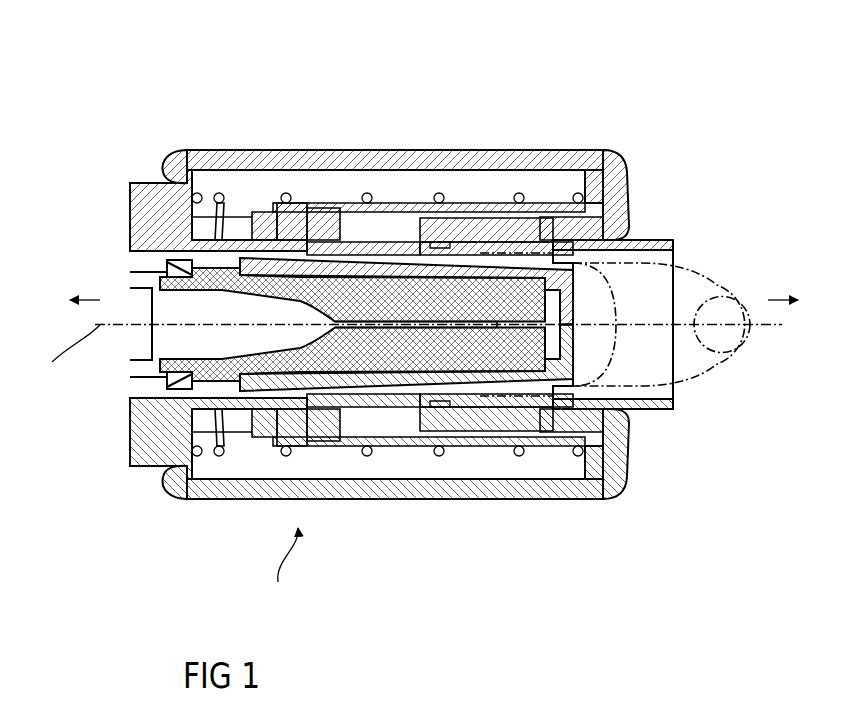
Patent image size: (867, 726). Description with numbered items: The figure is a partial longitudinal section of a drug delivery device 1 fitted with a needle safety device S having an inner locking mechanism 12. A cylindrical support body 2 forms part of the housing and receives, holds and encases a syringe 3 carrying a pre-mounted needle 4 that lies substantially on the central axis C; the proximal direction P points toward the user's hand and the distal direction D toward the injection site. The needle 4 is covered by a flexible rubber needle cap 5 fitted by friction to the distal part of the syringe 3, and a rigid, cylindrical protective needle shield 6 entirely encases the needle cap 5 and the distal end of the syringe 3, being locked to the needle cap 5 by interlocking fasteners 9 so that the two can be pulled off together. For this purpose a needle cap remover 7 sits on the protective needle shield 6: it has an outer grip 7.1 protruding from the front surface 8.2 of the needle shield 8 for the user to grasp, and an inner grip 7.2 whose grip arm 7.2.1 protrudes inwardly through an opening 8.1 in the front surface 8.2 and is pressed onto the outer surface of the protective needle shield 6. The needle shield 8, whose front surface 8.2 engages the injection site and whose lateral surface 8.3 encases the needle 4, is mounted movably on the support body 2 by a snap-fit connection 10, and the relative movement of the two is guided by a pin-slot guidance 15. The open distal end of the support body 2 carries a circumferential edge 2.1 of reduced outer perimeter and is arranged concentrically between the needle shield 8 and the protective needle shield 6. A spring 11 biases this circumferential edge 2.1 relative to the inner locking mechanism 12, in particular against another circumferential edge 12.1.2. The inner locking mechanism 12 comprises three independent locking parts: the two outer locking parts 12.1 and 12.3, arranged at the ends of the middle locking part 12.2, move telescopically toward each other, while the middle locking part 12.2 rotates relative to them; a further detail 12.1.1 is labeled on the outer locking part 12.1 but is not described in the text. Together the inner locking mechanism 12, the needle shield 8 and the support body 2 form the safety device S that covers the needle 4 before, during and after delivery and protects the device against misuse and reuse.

The drug delivery device 1 is at (424, 317).
The support body 2 is at (150, 181).
The circumferential edge 2.1 is at (203, 175).
The syringe 3 is at (138, 366).
The needle 4 is at (480, 345).
The needle cap 5 is at (342, 290).
The protective needle shield 6 is at (367, 378).
The needle cap remover 7 is at (647, 272).
The outer grip 7.1 is at (710, 286).
The inner grip 7.2 is at (642, 360).
The grip arm 7.2.1 is at (478, 243).
The needle shield 8 is at (398, 142).
The opening 8.1 is at (633, 415).
The front surface 8.2 is at (632, 175).
The lateral surface 8.3 is at (450, 155).
The interlocking fasteners 9 is at (235, 256).
The snap-fit connection 10 is at (187, 160).
The spring 11 is at (300, 217).
The inner locking mechanism 12 is at (457, 428).
The locking part 12.1 is at (668, 405).
The seal 12.1.1 is at (586, 198).
The circumferential edge 12.1.2 is at (615, 150).
The middle locking part 12.2 is at (560, 380).
The locking part 12.3 is at (330, 407).
The pin-slot guidance 15 is at (263, 204).